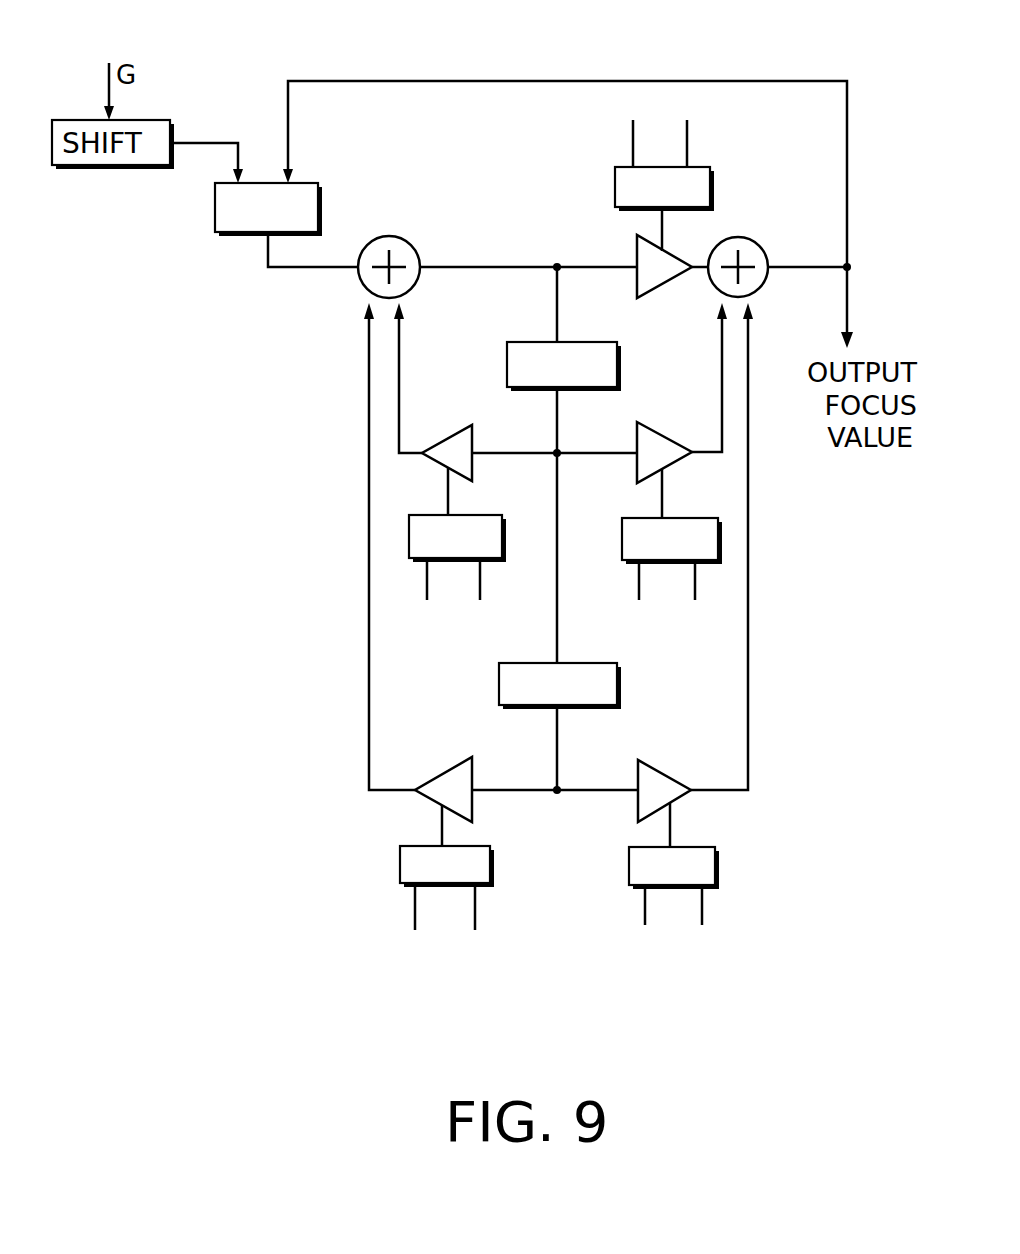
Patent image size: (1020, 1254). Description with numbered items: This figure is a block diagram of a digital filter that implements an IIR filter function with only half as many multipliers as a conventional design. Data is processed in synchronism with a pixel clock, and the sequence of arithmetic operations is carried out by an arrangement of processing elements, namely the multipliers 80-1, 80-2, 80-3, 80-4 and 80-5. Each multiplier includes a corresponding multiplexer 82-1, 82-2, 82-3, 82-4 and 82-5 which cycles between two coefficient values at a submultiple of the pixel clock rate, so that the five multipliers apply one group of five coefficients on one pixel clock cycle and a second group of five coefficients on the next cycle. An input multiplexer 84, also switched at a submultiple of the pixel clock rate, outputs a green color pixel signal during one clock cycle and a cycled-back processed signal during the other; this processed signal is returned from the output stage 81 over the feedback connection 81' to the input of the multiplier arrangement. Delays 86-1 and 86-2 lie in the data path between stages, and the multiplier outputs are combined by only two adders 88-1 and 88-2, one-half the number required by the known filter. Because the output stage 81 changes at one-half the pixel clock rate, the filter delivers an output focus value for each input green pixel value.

The input multiplexer 84 is at (318, 196).
The feedback connection 81' is at (565, 174).
The output stage 81 is at (872, 280).
The adder 88-1 is at (396, 240).
The adder 88-2 is at (745, 238).
The multiplier 80-1 is at (462, 432).
The multiplier 80-2 is at (438, 774).
The multiplier 80-3 is at (678, 417).
The multiplier 80-4 is at (661, 764).
The multiplier 80-5 is at (637, 252).
The multiplexer 82-1 is at (502, 515).
The multiplexer 82-2 is at (490, 865).
The multiplexer 82-3 is at (622, 530).
The multiplexer 82-4 is at (715, 865).
The multiplexer 82-5 is at (710, 188).
The delay 86-1 is at (507, 352).
The delay 86-2 is at (617, 680).